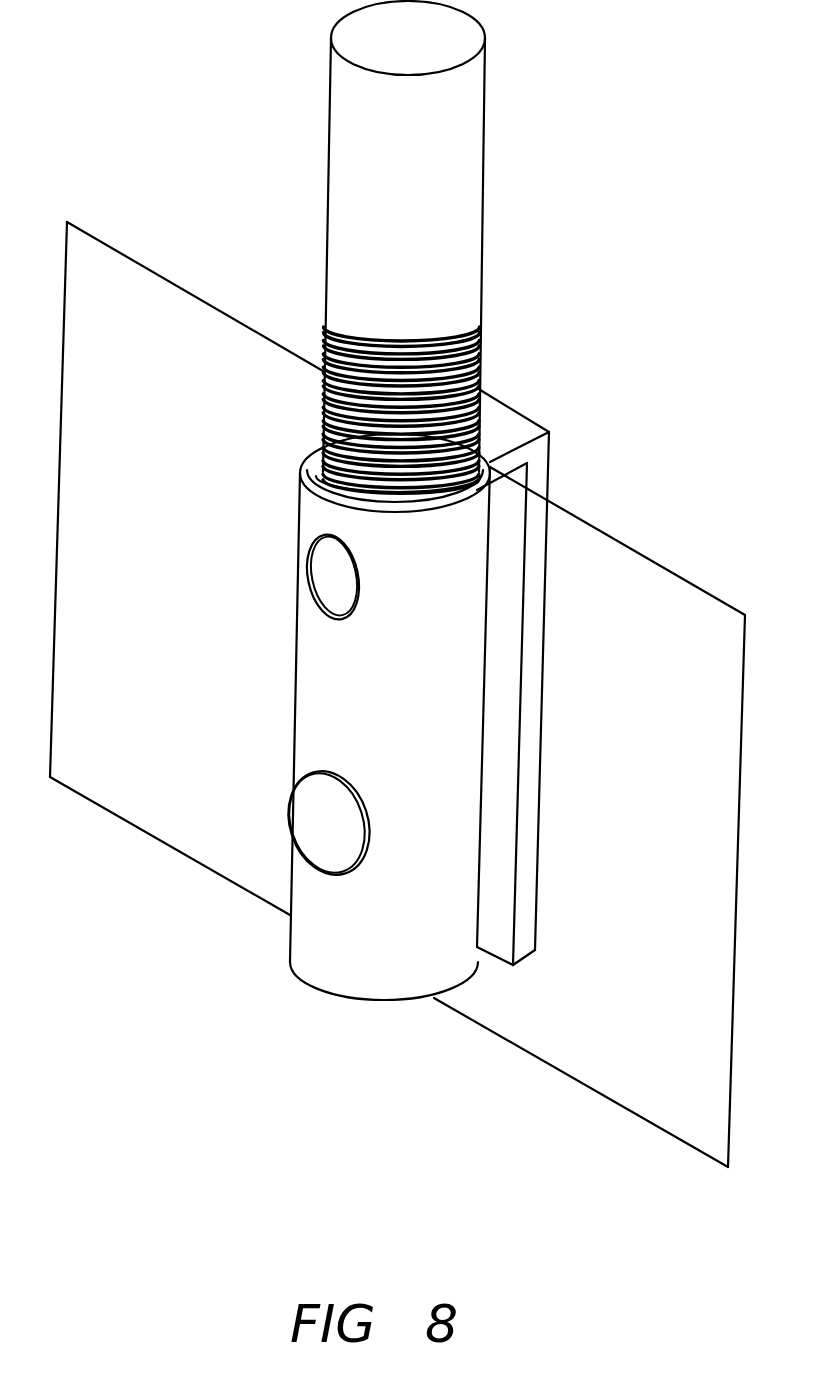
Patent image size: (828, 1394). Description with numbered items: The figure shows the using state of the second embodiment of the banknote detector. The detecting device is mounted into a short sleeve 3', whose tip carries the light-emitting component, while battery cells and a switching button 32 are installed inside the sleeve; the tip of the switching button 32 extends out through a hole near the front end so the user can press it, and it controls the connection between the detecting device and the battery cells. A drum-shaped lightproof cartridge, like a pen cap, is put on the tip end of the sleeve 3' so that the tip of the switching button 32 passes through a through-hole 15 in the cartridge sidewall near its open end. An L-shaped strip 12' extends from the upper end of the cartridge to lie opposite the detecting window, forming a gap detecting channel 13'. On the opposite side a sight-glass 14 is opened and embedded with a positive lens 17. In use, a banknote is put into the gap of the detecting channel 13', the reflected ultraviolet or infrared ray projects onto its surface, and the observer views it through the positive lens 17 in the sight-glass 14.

The short sleeve 3' is at (347, 247).
The L-shaped strip 12' is at (570, 676).
The detecting channel 13' is at (567, 714).
The switching button 32 is at (323, 567).
The through-hole 15 is at (312, 606).
The positive lens 17 is at (318, 778).
The sight-glass 14 is at (327, 847).